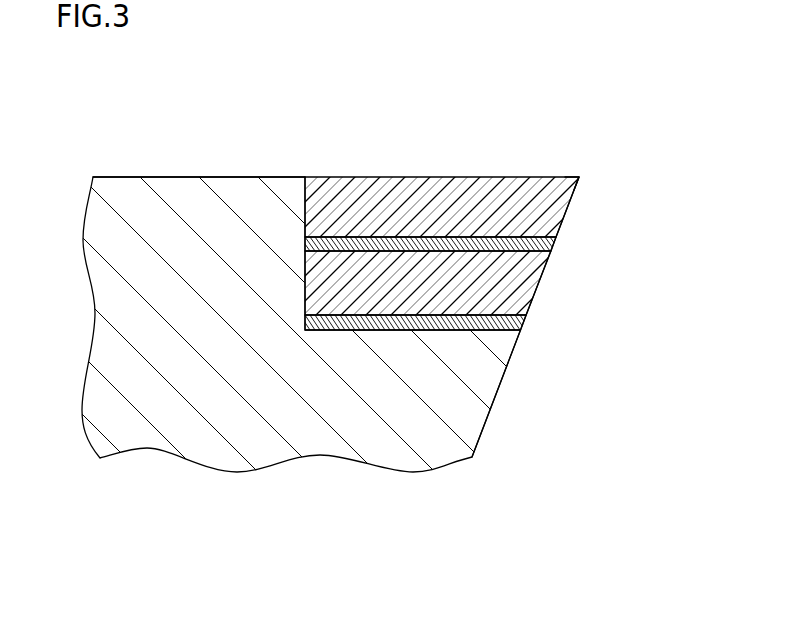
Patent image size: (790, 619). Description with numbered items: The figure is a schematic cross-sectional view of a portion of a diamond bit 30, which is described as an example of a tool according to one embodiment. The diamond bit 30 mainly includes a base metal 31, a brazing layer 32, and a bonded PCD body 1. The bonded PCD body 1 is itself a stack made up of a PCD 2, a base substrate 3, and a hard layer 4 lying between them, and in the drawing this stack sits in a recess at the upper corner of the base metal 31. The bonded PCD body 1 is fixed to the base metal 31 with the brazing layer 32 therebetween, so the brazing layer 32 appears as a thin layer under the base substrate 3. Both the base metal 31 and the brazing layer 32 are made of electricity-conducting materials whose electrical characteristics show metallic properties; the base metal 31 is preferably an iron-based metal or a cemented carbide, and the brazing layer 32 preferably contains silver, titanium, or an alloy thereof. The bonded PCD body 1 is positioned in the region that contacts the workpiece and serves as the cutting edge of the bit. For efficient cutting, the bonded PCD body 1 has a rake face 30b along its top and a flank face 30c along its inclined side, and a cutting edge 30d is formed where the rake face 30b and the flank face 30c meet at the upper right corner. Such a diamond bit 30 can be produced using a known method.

The bonded PCD body 1 is at (446, 246).
The PCD 2 is at (567, 208).
The base substrate 3 is at (430, 283).
The hard layer 4 is at (553, 244).
The diamond bit 30 is at (395, 258).
The rake face 30b is at (440, 177).
The flank face 30c is at (512, 356).
The cutting edge 30d is at (579, 178).
The base metal 31 is at (490, 390).
The brazing layer 32 is at (523, 322).